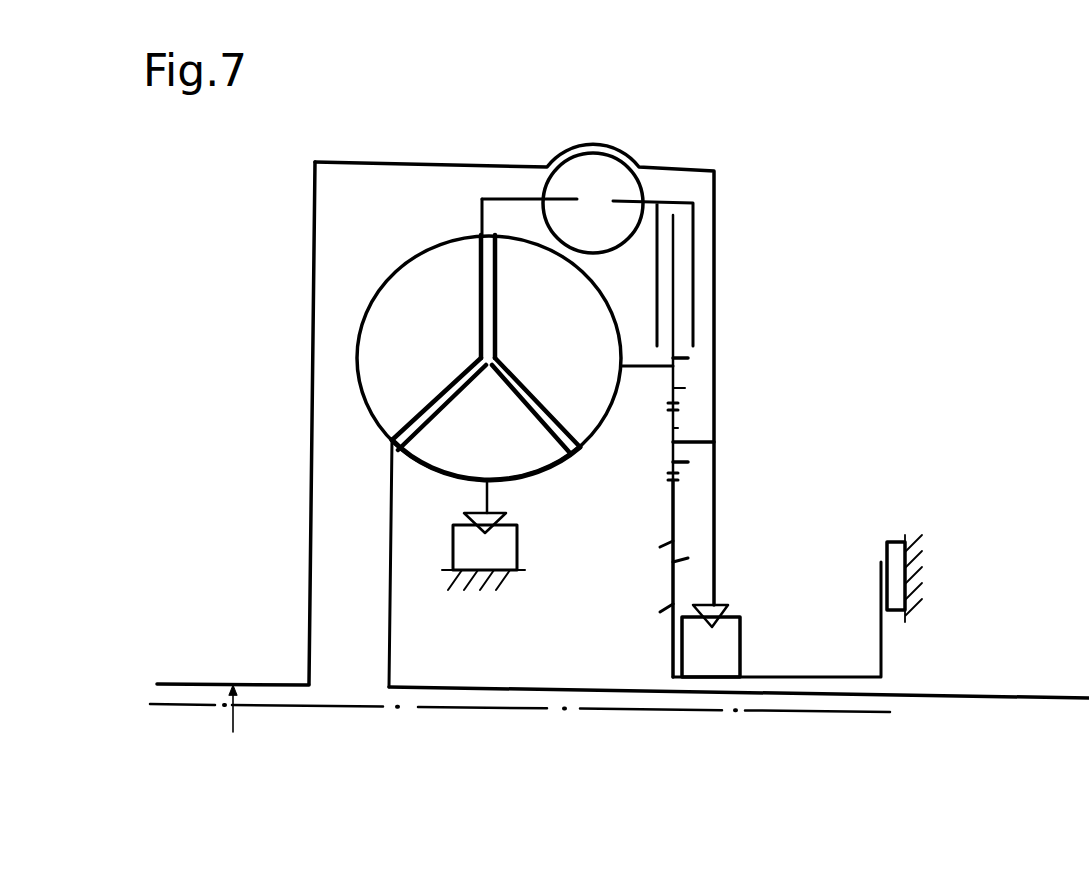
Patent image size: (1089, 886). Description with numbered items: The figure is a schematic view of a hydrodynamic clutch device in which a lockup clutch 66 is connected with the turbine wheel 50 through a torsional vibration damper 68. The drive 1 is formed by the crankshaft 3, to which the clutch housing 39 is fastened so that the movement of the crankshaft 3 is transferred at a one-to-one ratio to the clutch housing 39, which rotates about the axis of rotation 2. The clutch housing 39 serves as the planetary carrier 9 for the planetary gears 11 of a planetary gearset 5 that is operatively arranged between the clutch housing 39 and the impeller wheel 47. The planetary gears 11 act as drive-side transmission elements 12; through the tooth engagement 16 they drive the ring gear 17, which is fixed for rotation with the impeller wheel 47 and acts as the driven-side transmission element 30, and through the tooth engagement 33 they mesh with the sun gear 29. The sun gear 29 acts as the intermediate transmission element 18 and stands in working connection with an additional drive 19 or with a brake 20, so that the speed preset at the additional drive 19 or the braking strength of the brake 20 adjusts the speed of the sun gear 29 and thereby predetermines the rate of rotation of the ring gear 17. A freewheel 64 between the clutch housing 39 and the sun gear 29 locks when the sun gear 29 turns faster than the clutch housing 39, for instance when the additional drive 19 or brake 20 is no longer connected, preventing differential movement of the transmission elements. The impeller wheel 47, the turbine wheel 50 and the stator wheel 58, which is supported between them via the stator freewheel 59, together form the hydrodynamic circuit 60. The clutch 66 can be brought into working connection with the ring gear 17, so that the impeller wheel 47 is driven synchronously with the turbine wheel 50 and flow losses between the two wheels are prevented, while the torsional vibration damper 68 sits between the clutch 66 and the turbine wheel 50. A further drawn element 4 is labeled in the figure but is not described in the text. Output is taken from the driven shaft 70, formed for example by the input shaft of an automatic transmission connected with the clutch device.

The drive 1 is at (226, 726).
The axis of rotation 2 is at (313, 705).
The crankshaft 3 is at (264, 684).
The pressure line 4 is at (668, 607).
The planetary gearset 5 is at (665, 545).
The planetary carrier 9 is at (714, 442).
The planetary gears 11 is at (675, 430).
The drive-side transmission elements 12 is at (678, 462).
The tooth engagement 16 is at (675, 407).
The ring gear 17 is at (685, 388).
The intermediate transmission element 18 is at (672, 560).
The additional drive 19 is at (900, 575).
The brake 20 is at (915, 608).
The sun gear 29 is at (762, 678).
The driven-side transmission element 30 is at (688, 358).
The tooth engagement 33 is at (678, 477).
The clutch housing 39 is at (540, 162).
The impeller wheel 47 is at (653, 168).
The turbine wheel 50 is at (444, 270).
The stator wheel 58 is at (455, 425).
The stator freewheel 59 is at (483, 533).
The hydrodynamic circuit 60 is at (488, 245).
The freewheel 64 is at (710, 615).
The clutch 66 is at (676, 262).
The torsional vibration damper 68 is at (572, 295).
The driven shaft 70 is at (528, 692).